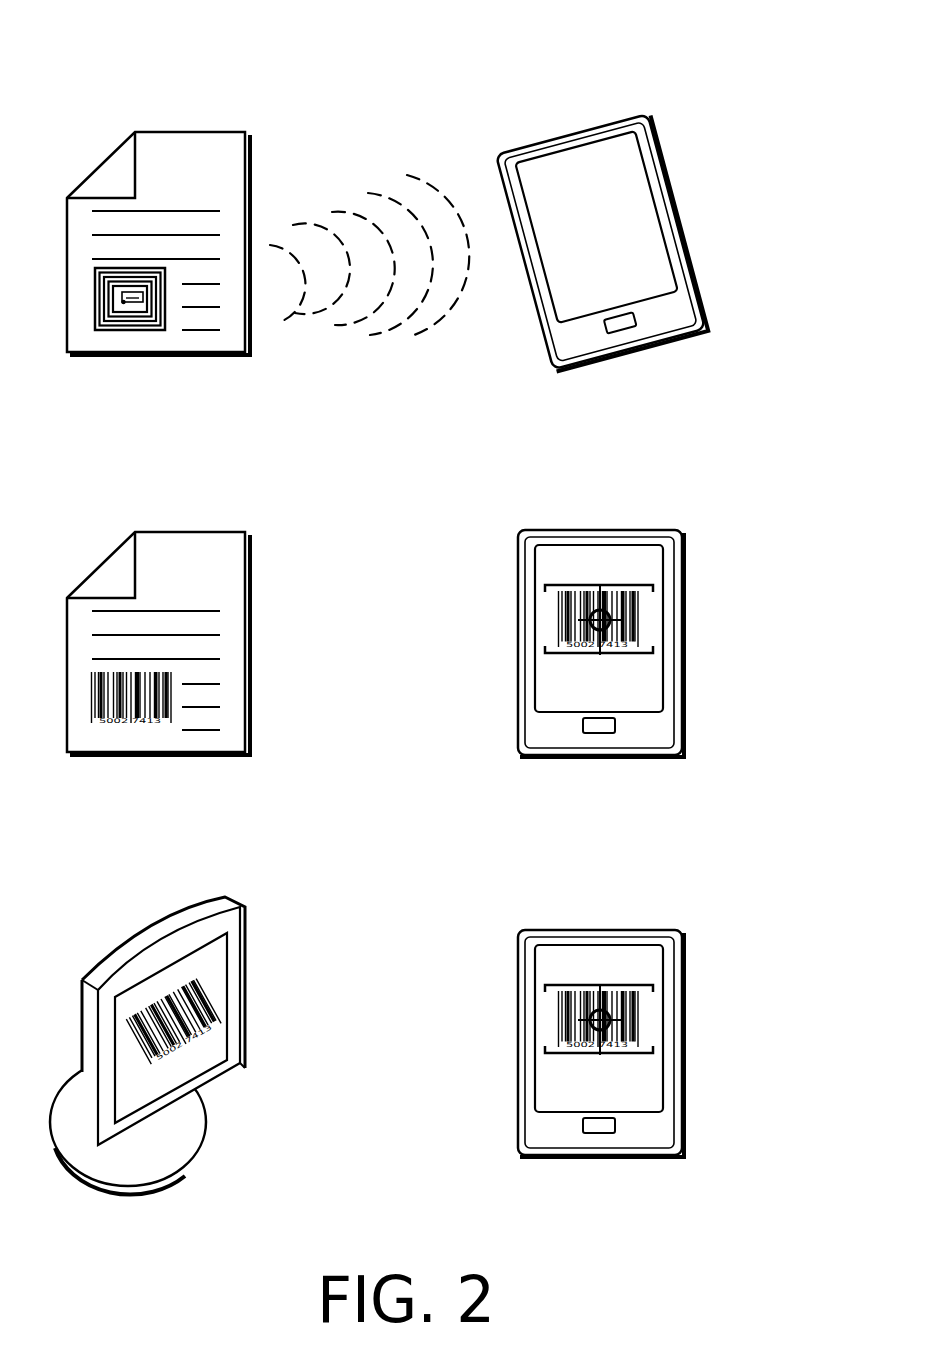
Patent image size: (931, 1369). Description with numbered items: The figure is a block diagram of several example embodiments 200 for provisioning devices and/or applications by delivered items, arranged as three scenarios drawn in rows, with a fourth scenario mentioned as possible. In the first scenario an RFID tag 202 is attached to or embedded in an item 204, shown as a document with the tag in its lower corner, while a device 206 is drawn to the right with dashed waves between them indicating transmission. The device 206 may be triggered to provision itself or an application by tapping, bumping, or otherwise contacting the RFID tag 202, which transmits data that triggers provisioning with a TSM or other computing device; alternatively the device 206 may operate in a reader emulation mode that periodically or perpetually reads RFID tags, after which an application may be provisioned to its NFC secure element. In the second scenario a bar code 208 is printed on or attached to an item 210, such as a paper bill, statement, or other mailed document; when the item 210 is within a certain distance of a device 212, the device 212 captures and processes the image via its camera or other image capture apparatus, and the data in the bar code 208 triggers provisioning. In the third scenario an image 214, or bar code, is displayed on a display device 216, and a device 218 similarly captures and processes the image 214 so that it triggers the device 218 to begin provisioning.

The example embodiments 200 is at (707, 35).
The RFID tag 202 is at (165, 328).
The item 204 is at (158, 275).
The device 206 is at (489, 266).
The bar code 208 is at (168, 727).
The item 210 is at (158, 671).
The device 212 is at (601, 670).
The image 214 is at (203, 1033).
The display device 216 is at (147, 1062).
The device 218 is at (601, 1068).